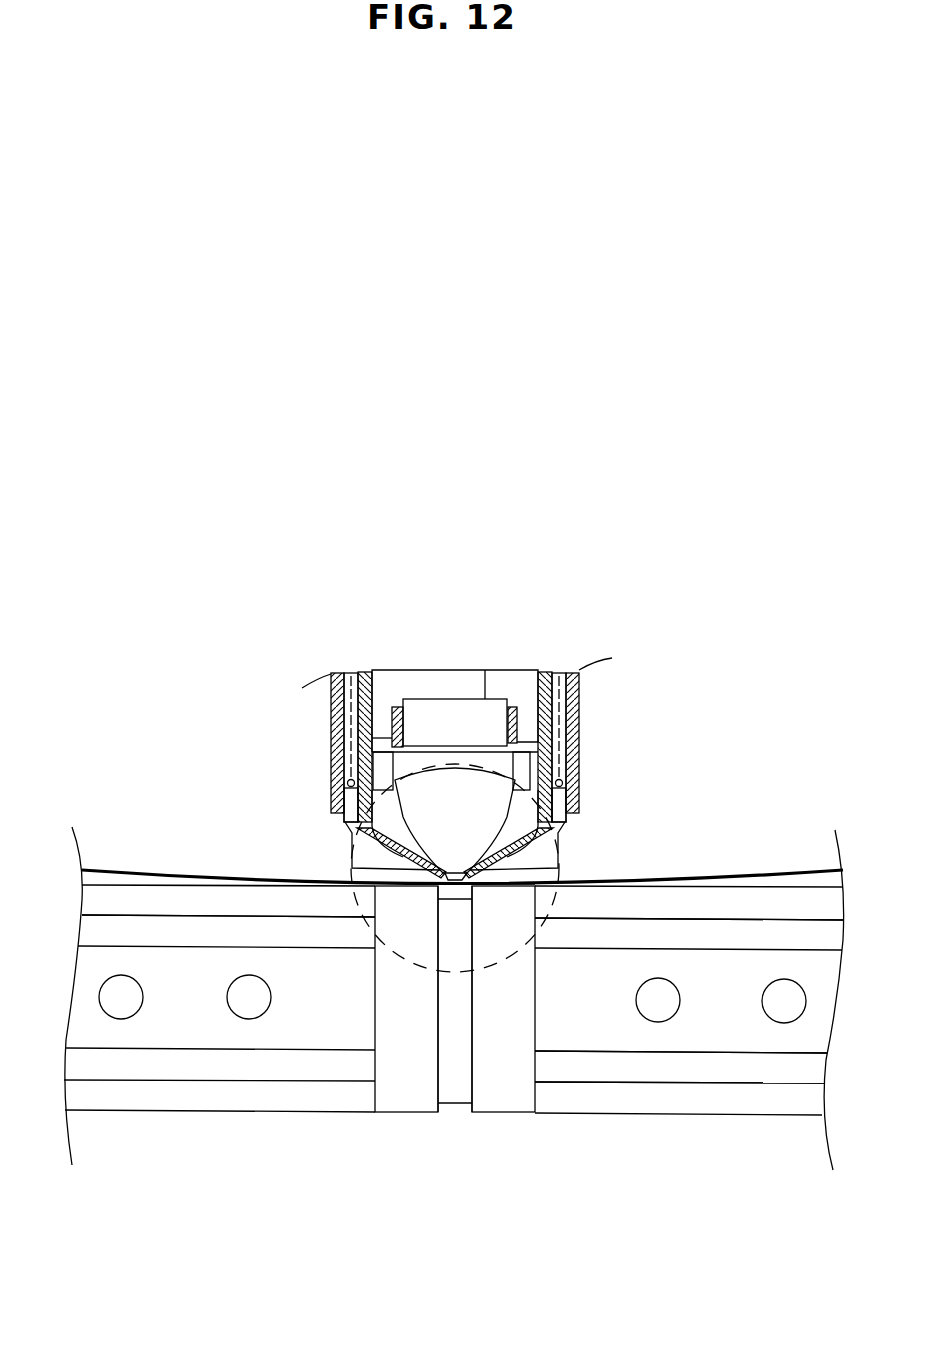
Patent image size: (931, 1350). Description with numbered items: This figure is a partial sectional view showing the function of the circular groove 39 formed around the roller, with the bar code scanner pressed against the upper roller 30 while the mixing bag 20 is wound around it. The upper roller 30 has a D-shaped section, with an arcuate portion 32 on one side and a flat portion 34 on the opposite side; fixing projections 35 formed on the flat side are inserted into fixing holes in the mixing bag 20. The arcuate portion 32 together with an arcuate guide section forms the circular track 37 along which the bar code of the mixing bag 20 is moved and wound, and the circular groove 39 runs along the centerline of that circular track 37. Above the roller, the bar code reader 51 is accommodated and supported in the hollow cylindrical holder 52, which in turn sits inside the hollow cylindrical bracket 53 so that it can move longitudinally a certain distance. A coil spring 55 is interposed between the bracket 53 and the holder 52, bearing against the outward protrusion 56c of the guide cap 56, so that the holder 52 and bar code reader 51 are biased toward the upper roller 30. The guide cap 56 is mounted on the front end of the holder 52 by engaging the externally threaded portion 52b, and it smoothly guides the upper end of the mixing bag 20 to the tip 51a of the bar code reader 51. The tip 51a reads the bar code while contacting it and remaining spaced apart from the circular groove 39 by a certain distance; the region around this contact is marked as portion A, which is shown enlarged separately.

The mixing bag 20 is at (121, 870).
The upper roller 30 is at (146, 1136).
The arcuate portion 32 is at (198, 900).
The flat portion 34 is at (722, 1033).
The fixing projections 35 is at (653, 1003).
The circular track 37 is at (393, 1060).
The circular groove 39 is at (455, 1073).
The bar code reader 51 is at (417, 676).
The tip 51a is at (440, 872).
The holder 52 is at (540, 702).
The externally threaded portion 52b is at (335, 768).
The bracket 53 is at (579, 702).
The coil spring 55 is at (331, 720).
The guide cap 56 is at (558, 860).
The outward protrusion 56c is at (343, 808).
The portion A is at (565, 828).